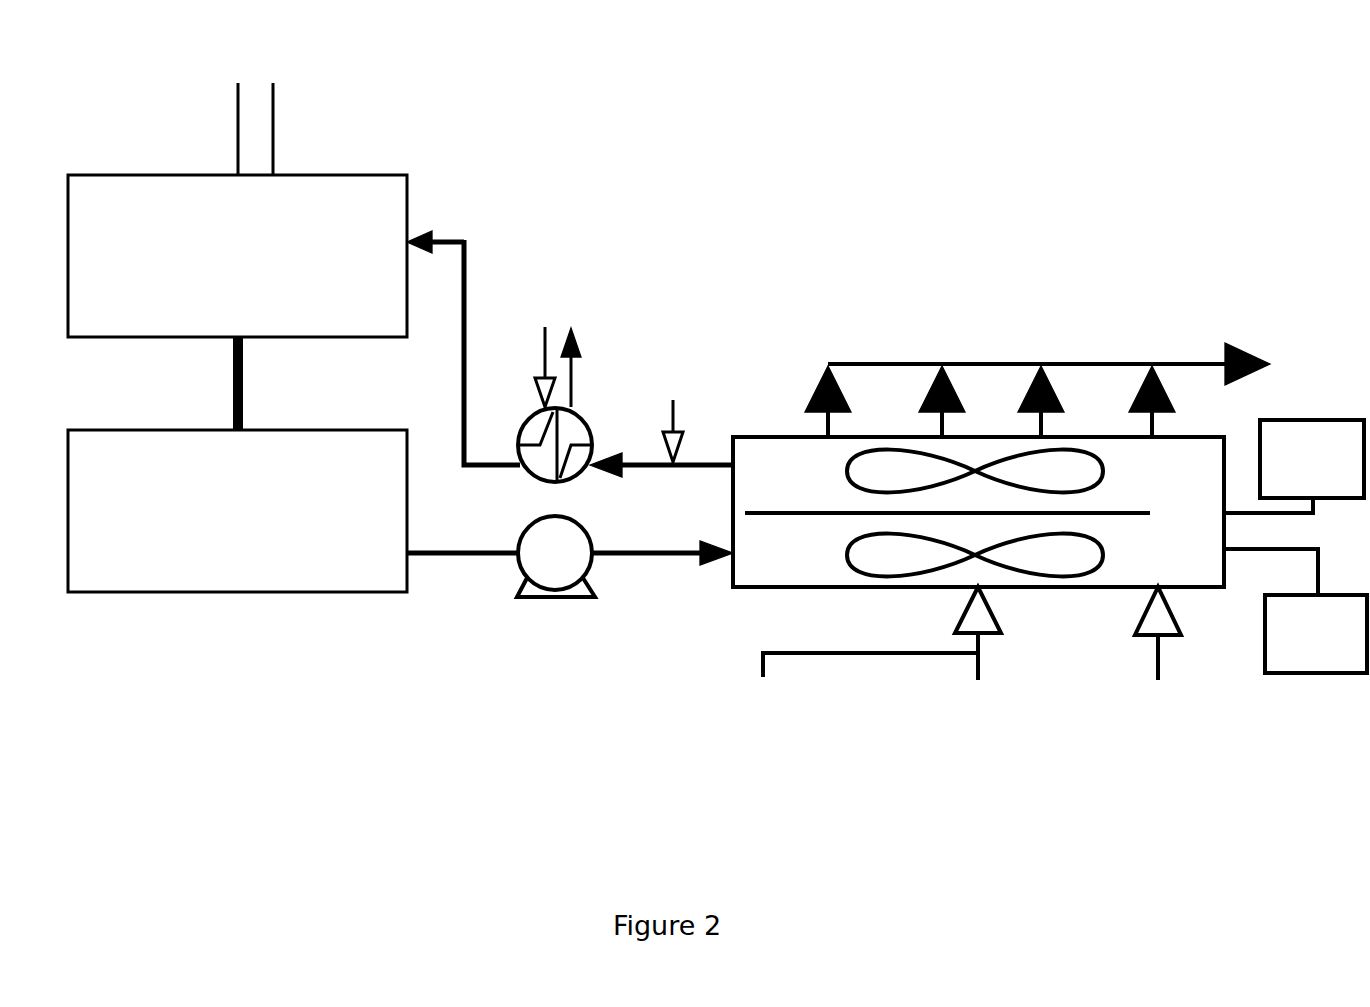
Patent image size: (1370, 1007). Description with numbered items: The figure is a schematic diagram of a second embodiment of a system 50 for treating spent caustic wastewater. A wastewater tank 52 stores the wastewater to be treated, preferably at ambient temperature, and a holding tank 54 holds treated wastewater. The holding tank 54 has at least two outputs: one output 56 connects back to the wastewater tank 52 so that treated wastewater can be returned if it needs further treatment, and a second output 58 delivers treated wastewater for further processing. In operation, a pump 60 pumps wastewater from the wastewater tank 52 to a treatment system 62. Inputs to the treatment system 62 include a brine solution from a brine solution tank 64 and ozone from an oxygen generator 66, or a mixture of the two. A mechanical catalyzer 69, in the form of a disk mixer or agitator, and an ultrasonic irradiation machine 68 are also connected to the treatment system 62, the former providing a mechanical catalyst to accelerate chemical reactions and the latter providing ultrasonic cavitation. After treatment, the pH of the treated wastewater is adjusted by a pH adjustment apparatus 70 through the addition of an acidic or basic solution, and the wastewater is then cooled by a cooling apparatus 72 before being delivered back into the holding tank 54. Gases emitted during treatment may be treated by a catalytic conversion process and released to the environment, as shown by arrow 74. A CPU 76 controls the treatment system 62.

The system 50 is at (1120, 122).
The wastewater tank 52 is at (293, 511).
The holding tank 54 is at (294, 320).
The output 56 is at (243, 402).
The second output 58 is at (274, 112).
The pump 60 is at (517, 597).
The treatment system 62 is at (782, 578).
The brine solution tank 64 is at (683, 708).
The oxygen generator 66 is at (940, 708).
The ultrasonic irradiation machine 68 is at (1088, 712).
The mechanical catalyzer 69 is at (1294, 466).
The pH adjustment apparatus 70 is at (745, 372).
The cooling apparatus 72 is at (612, 311).
The arrow 74 is at (1057, 369).
The CPU 76 is at (1295, 611).